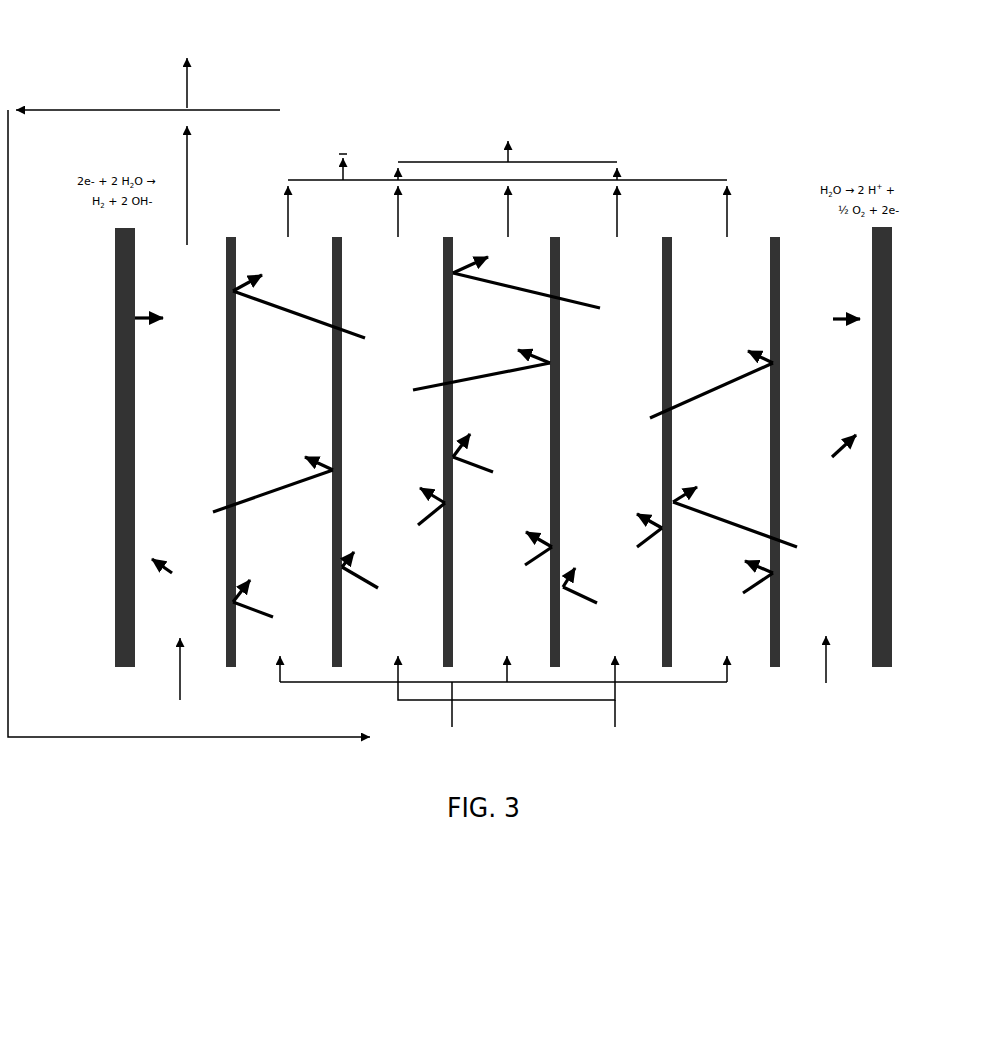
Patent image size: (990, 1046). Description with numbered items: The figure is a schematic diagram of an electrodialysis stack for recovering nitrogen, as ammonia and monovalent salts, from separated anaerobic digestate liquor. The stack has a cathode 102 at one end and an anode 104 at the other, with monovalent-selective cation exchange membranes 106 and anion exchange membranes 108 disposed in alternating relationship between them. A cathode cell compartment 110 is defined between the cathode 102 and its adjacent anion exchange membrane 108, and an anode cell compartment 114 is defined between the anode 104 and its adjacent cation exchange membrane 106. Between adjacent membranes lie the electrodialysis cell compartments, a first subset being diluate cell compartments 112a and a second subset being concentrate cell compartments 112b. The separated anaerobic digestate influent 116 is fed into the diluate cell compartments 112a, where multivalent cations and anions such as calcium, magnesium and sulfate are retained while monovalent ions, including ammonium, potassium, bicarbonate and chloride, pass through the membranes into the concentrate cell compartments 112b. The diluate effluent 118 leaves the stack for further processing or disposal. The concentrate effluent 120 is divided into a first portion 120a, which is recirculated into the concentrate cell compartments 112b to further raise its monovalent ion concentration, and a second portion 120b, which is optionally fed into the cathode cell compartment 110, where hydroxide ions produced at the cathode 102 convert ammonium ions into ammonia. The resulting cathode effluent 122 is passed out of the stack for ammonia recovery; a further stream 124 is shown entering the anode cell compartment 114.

The cathode 102 is at (91, 447).
The anode 104 is at (918, 447).
The monovalent-selective cation exchange membrane 106 is at (553, 438).
The anion exchange membrane 108 is at (446, 437).
The cathode cell compartment 110 is at (194, 471).
The diluate cell compartment 112a is at (418, 294).
The concentrate cell compartment 112b is at (312, 389).
The anode cell compartment 114 is at (825, 441).
The separated anaerobic digestate influent 116 is at (512, 727).
The diluate effluent 118 is at (507, 142).
The concentrate effluent 120 is at (507, 170).
The first portion of concentrate effluent 120a is at (367, 431).
The second portion of concentrate effluent 120b is at (183, 681).
The cathode effluent 122 is at (148, 132).
The anolyte inlet 124 is at (826, 680).